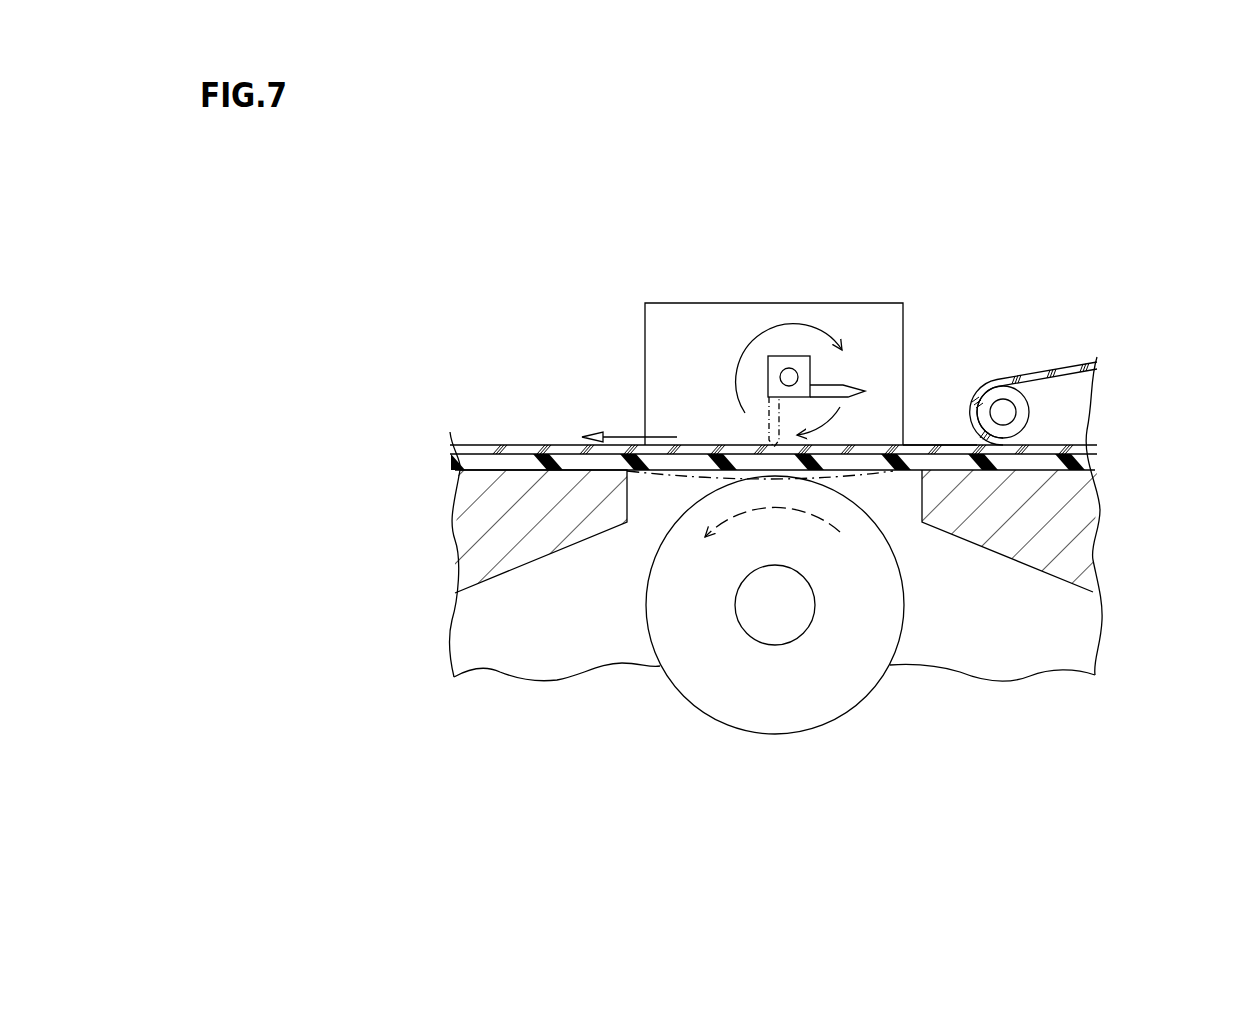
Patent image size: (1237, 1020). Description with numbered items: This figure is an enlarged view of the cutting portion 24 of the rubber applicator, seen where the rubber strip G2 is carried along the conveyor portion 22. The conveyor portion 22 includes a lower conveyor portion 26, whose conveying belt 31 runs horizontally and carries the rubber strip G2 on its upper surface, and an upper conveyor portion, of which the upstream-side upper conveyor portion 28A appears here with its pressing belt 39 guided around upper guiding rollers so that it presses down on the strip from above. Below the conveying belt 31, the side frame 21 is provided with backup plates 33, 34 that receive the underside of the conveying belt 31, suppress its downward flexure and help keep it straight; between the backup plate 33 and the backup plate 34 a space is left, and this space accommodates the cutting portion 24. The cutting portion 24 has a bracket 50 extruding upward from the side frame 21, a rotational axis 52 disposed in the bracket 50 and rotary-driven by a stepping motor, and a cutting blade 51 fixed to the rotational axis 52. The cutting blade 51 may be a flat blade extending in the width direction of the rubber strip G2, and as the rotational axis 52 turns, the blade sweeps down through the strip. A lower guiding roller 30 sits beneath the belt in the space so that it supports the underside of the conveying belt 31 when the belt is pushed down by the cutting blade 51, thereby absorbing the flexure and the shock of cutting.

The side frame 21 is at (1077, 652).
The conveyor portion 22 is at (506, 422).
The cutting portion 24 is at (815, 262).
The lower conveyor portion 26 is at (1015, 575).
The upstream-side upper conveyor portion 28A is at (1013, 370).
The lower guiding roller 30 is at (668, 648).
The conveying belt 31 is at (667, 463).
The backup plate 33 is at (1067, 558).
The backup plate 34 is at (493, 562).
The pressing belt 39 is at (1058, 368).
The bracket 50 is at (678, 310).
The cutting blade 51 is at (848, 385).
The rotational axis 52 is at (782, 370).
The rubber strip G2 is at (930, 447).